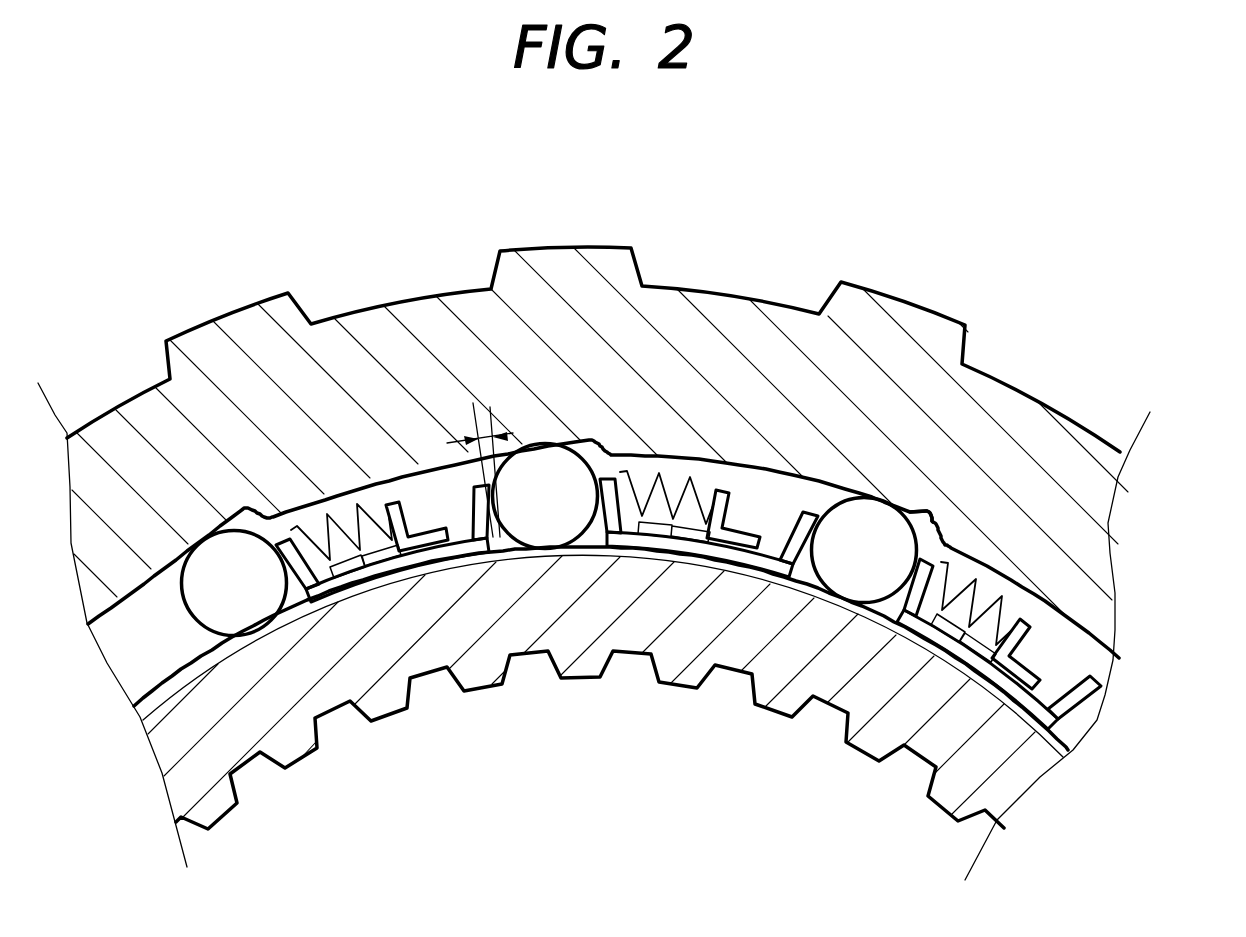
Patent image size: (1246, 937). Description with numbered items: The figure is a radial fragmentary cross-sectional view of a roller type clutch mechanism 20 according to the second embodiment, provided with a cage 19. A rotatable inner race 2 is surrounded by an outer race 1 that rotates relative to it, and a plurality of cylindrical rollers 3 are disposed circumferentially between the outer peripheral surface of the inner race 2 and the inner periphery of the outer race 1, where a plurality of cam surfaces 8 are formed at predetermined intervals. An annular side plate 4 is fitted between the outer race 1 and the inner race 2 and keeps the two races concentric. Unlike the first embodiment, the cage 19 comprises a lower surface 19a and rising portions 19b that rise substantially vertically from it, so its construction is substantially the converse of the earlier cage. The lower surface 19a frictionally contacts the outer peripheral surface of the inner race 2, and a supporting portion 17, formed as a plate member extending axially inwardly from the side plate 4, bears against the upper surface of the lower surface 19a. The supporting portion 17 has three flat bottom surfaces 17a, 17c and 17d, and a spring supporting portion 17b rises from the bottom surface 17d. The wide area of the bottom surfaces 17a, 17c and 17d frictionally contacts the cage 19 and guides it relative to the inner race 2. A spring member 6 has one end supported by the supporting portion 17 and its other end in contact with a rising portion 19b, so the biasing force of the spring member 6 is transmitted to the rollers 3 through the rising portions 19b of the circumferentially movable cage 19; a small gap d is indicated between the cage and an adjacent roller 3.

The outer race 1 is at (715, 350).
The inner race 2 is at (478, 670).
The cylindrical rollers 3 is at (208, 595).
The side plate 4 is at (1078, 723).
The spring member 6 is at (972, 588).
The cam surfaces 8 is at (915, 520).
The supporting portion 17 is at (1010, 640).
The flat bottom surface 17a is at (352, 578).
The spring supporting portion 17b is at (405, 512).
The flat bottom surface 17c is at (385, 570).
The flat bottom surface 17d is at (440, 548).
The cage 19 is at (737, 560).
The lower surface 19a is at (1000, 690).
The rising portions 19b is at (1080, 688).
The roller type clutch mechanism 20 is at (410, 215).
The gap d is at (480, 470).